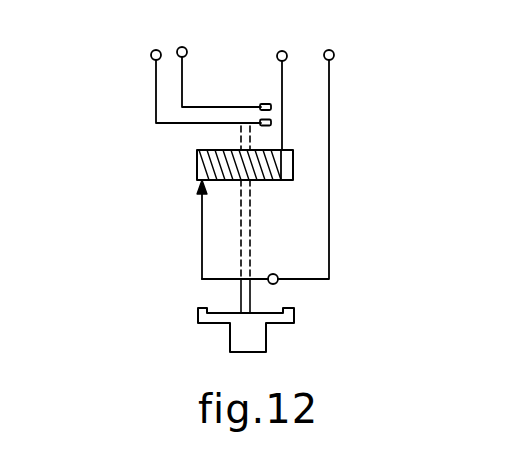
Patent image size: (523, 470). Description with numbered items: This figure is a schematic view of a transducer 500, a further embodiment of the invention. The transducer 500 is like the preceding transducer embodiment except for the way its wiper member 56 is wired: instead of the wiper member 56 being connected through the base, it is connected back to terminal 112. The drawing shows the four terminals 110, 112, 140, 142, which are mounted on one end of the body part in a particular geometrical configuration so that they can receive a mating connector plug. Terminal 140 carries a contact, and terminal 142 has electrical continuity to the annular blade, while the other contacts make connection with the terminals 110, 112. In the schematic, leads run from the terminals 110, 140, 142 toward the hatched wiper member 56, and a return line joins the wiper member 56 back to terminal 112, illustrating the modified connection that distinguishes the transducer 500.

The terminal 142 is at (152, 51).
The terminal 140 is at (186, 48).
The terminal 110 is at (285, 52).
The terminal 112 is at (334, 54).
The wiper member 56 is at (201, 211).
The transducer 500 is at (344, 132).